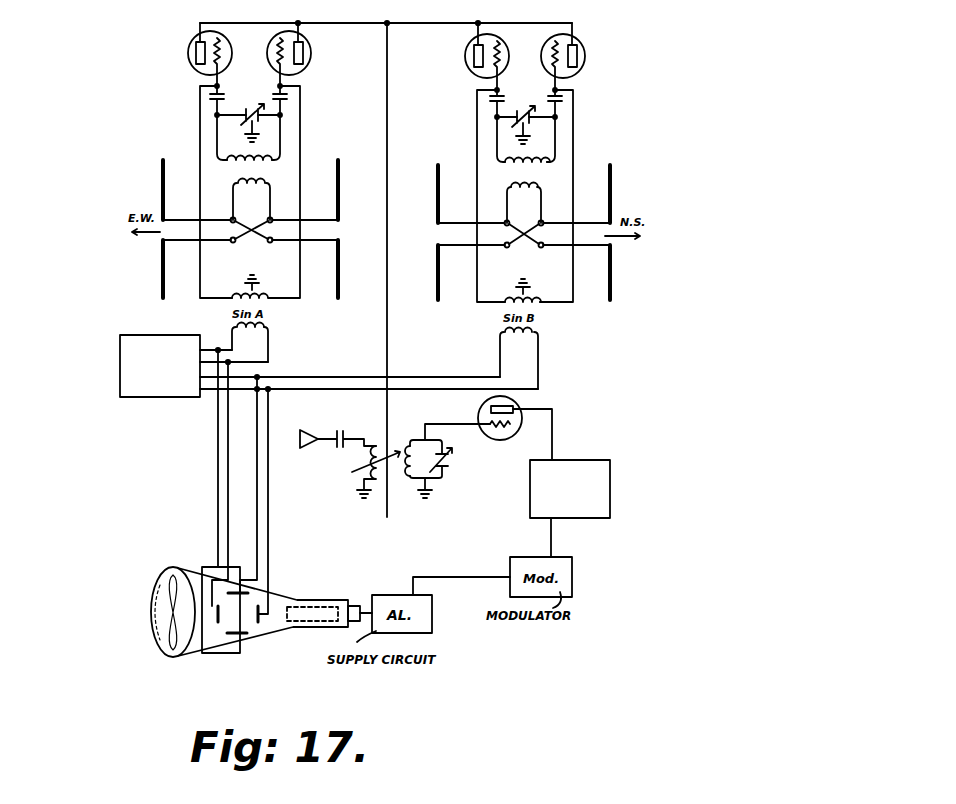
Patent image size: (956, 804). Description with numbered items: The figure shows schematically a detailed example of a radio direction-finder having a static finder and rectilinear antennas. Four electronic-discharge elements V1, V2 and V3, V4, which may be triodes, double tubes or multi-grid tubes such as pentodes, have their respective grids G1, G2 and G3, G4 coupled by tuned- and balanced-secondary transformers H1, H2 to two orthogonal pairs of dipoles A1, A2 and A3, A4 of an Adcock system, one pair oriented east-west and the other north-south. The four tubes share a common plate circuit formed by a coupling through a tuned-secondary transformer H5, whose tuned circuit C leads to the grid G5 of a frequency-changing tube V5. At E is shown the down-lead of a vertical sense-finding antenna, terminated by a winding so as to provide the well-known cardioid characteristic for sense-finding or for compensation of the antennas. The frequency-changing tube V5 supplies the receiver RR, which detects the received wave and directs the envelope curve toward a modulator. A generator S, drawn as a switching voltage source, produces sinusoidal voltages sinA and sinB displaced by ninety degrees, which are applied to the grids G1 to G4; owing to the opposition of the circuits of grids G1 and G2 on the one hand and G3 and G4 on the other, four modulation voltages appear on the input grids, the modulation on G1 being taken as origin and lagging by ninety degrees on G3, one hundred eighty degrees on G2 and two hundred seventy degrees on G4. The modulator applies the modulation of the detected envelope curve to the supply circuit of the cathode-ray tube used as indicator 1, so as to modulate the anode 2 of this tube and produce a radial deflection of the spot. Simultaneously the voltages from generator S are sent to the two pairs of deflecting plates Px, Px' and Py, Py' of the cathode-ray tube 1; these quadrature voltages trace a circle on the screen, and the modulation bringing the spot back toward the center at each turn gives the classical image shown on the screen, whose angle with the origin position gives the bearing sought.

The electronic-discharge element V1 is at (200, 55).
The electronic-discharge element V2 is at (295, 55).
The electronic-discharge element V3 is at (476, 56).
The electronic-discharge element V4 is at (576, 56).
The frequency-changing tube V5 is at (506, 426).
The grid G1 is at (224, 98).
The grid G2 is at (271, 98).
The grid G3 is at (504, 100).
The grid G4 is at (546, 100).
The grid of frequency-changing tube G5 is at (467, 433).
The dipole A1 is at (183, 229).
The dipole A2 is at (320, 229).
The dipole A3 is at (455, 232).
The dipole A4 is at (591, 232).
The tuned- and balanced-secondary transformer H1 is at (260, 196).
The tuned- and balanced-secondary transformer H2 is at (535, 203).
The tuned-secondary transformer H5 is at (382, 459).
The tuned circuit C is at (431, 464).
The down-lead of vertical sense-finding antenna E is at (338, 433).
The generator S is at (134, 374).
The receiver RR is at (632, 454).
The cathode-ray tube indicator 1 is at (261, 616).
The anode 2 is at (308, 606).
The deflecting plate Px is at (238, 586).
The deflecting plate Px' is at (237, 640).
The deflecting plate Py is at (227, 614).
The deflecting plate Py' is at (250, 614).